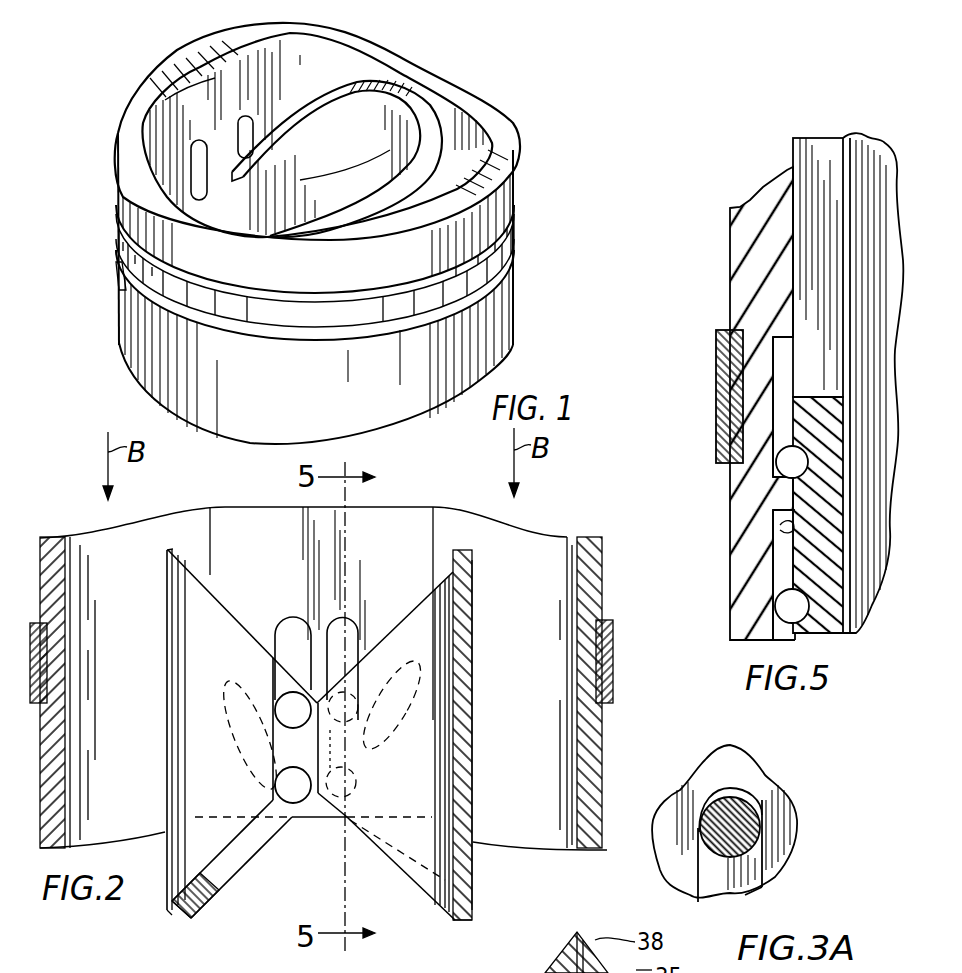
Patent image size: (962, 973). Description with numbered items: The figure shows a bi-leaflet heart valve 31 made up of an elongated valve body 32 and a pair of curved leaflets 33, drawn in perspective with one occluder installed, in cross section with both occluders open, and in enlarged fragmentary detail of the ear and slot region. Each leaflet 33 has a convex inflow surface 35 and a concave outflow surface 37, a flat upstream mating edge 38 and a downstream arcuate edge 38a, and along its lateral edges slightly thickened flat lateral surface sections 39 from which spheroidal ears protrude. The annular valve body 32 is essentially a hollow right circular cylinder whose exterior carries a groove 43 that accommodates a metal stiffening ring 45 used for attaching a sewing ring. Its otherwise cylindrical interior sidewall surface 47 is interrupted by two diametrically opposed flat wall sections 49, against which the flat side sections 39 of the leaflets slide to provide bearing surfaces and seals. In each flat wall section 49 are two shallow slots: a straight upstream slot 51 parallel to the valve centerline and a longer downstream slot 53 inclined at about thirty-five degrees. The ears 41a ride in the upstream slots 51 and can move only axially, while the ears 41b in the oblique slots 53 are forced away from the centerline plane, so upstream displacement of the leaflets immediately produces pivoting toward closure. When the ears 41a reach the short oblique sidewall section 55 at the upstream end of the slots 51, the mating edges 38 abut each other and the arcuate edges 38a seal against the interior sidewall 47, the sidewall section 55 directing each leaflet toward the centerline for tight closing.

In FIG. 1, the bi-leaflet heart valve 31 is at (470, 82).
In FIG. 2, the bi-leaflet heart valve 31 is at (567, 512).
In FIG. 1, the valve body 32 is at (516, 176).
In FIG. 2, the valve body 32 is at (38, 553).
In FIG. 5, the valve body 32 is at (738, 248).
In FIG. 2, the leaflets 33 is at (167, 615).
In FIG. 2, the convex inflow surface 35 is at (475, 698).
In FIG. 1, the concave outflow surface 37 is at (371, 171).
In FIG. 2, the concave outflow surface 37 is at (438, 880).
In FIG. 1, the upstream mating edge 38 is at (400, 80).
In FIG. 2, the upstream mating edge 38 is at (450, 552).
In FIG. 5, the upstream mating edge 38 is at (812, 162).
In FIG. 2, the downstream arcuate edge 38a is at (175, 928).
In FIG. 2, the flat lateral surface sections 39 is at (313, 758).
In FIG. 5, the flat lateral surface sections 39 is at (793, 584).
In FIG. 2, the ears in upstream slots 41a is at (285, 700).
In FIG. 5, the ears in upstream slots 41a is at (783, 474).
In FIG. 3A, the ears in upstream slots 41a is at (763, 793).
In FIG. 2, the ears in oblique slots 41b is at (305, 832).
In FIG. 5, the ears in oblique slots 41b is at (780, 613).
In FIG. 1, the groove 43 is at (502, 252).
In FIG. 2, the stiffening ring 45 is at (614, 690).
In FIG. 5, the stiffening ring 45 is at (715, 365).
In FIG. 1, the interior sidewall surface 47 is at (333, 60).
In FIG. 2, the interior sidewall surface 47 is at (145, 687).
In FIG. 1, the flat wall sections 49 is at (228, 121).
In FIG. 2, the flat wall sections 49 is at (401, 555).
In FIG. 3A, the flat wall sections 49 is at (737, 773).
In FIG. 1, the upstream slots 51 is at (185, 100).
In FIG. 2, the upstream slots 51 is at (345, 622).
In FIG. 5, the upstream slots 51 is at (778, 380).
In FIG. 3A, the upstream slots 51 is at (748, 893).
In FIG. 2, the downstream slots 53 is at (250, 785).
In FIG. 5, the downstream slots 53 is at (780, 526).
In FIG. 2, the oblique sidewall section 55 is at (290, 620).
In FIG. 3A, the oblique sidewall section 55 is at (697, 782).